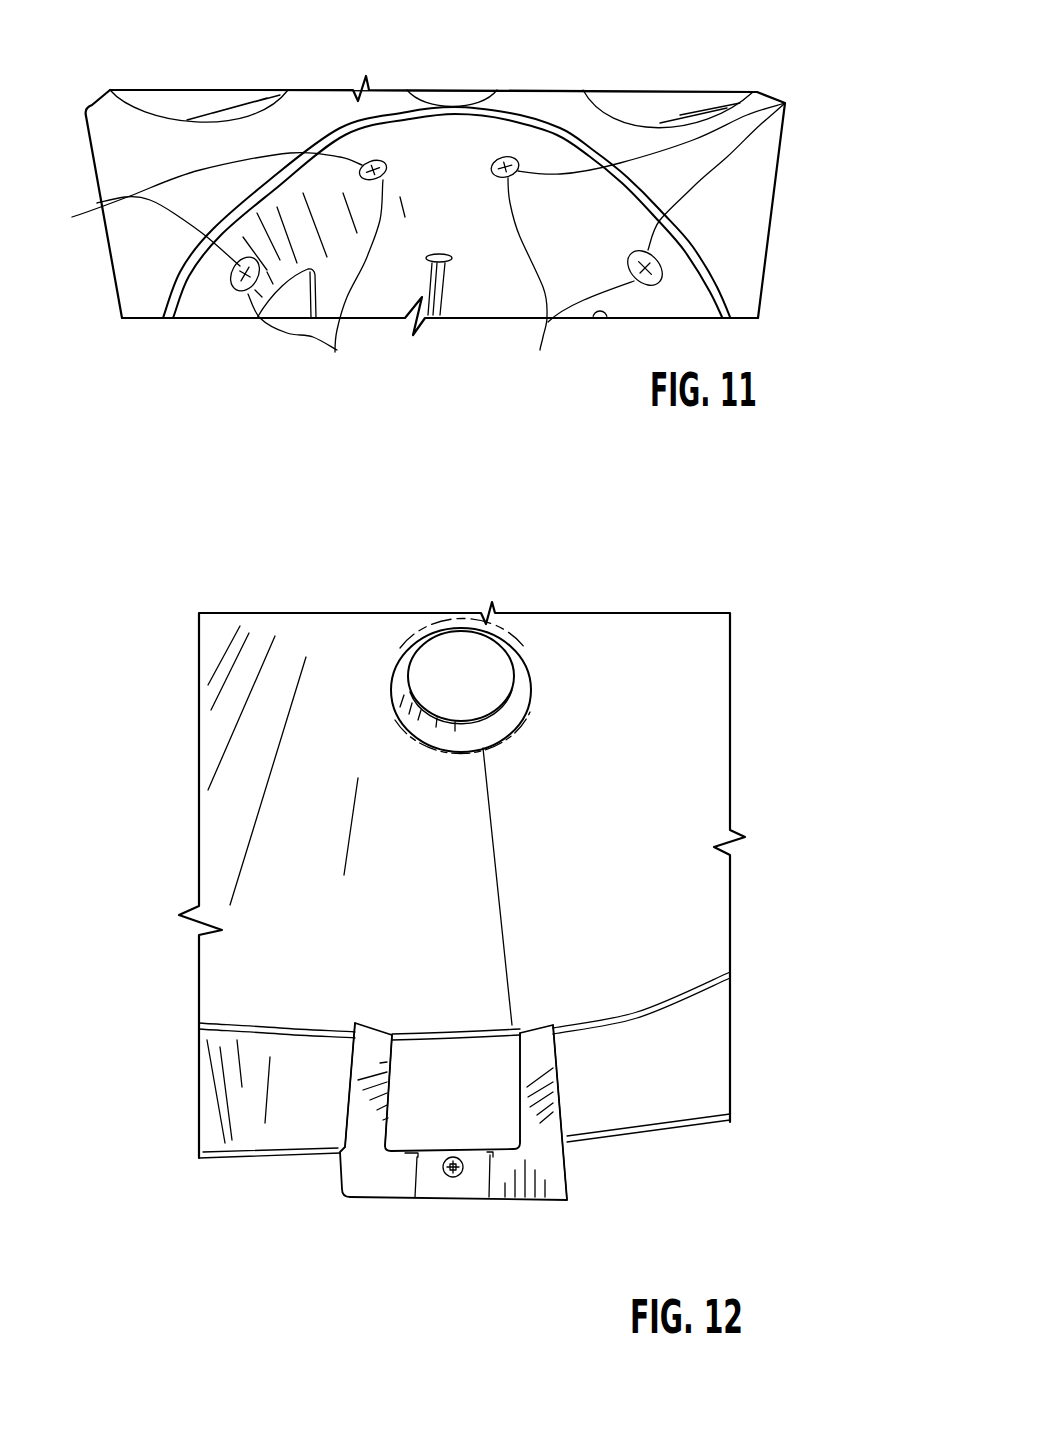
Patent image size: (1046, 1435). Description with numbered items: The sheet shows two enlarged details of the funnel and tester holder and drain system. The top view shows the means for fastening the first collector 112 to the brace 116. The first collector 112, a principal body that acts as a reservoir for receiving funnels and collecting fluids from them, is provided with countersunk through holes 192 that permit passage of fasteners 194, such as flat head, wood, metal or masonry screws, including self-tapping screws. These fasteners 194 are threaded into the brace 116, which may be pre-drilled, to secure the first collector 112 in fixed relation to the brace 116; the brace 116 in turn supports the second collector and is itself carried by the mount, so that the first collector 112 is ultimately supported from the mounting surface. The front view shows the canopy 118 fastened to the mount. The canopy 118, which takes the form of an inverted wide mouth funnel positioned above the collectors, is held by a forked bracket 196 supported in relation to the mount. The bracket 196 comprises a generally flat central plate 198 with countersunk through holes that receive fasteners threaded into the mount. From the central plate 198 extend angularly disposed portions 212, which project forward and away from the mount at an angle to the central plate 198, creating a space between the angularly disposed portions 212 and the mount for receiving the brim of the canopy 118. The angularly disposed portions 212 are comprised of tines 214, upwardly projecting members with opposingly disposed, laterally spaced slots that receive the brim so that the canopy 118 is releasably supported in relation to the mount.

In FIG. 11, the first collector 112 is at (663, 257).
In FIG. 11, the brace 116 is at (548, 102).
In FIG. 11, the countersunk through holes 192 is at (850, 92).
In FIG. 11, the fasteners 194 is at (336, 352).
In FIG. 12, the canopy 118 is at (697, 1120).
In FIG. 12, the bracket 196 is at (467, 1170).
In FIG. 12, the central plate 198 is at (465, 1192).
In FIG. 12, the angularly disposed portions 212 is at (333, 1171).
In FIG. 12, the tines 214 is at (360, 1103).